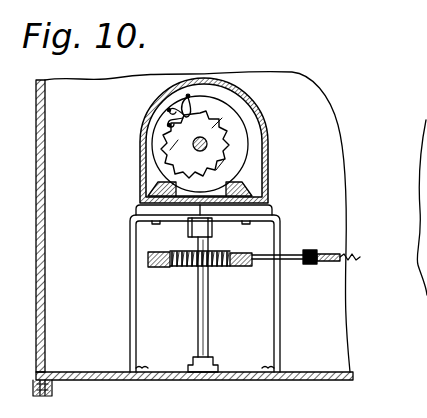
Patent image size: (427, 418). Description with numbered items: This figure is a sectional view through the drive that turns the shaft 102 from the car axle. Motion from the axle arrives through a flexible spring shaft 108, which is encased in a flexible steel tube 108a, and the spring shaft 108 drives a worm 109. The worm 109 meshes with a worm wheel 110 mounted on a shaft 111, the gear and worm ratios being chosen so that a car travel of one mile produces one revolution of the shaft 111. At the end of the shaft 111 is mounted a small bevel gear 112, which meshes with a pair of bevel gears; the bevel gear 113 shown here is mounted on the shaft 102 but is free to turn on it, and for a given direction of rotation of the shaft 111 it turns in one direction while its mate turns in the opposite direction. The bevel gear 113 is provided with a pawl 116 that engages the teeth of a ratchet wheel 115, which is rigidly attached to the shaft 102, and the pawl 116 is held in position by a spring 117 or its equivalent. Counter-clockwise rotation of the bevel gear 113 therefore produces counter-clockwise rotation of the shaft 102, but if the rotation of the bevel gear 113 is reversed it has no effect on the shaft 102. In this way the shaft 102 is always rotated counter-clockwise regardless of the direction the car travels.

The shaft 102 is at (196, 147).
The flexible spring shaft 108 is at (372, 245).
The flexible steel tube 108a is at (323, 266).
The worm 109 is at (188, 268).
The worm wheel 110 is at (150, 259).
The shaft 111 is at (210, 325).
The small bevel gear 112 is at (246, 190).
The bevel gear 113 is at (250, 146).
The ratchet wheel 115 is at (222, 138).
The pawl 116 is at (190, 104).
The spring 117 is at (170, 113).